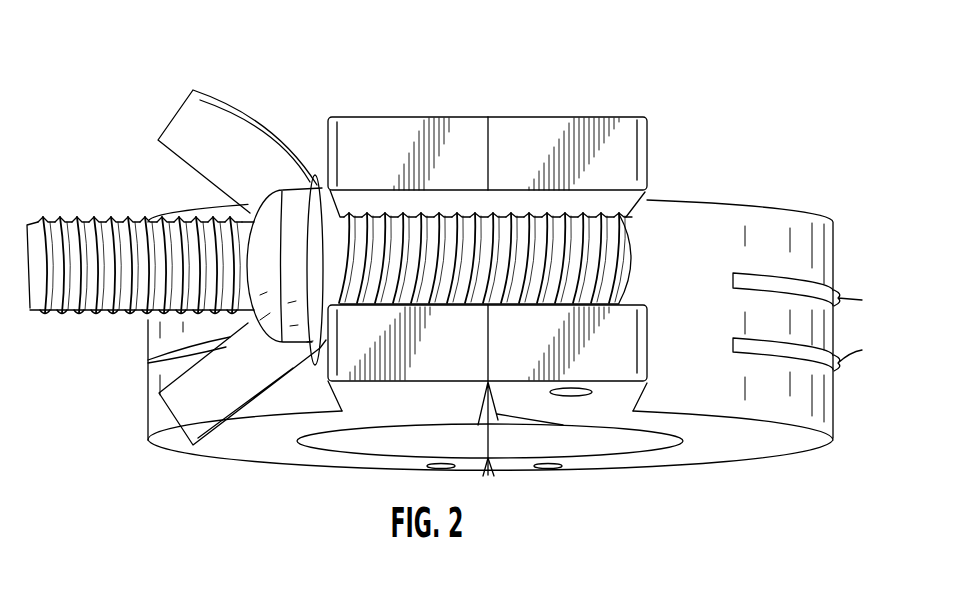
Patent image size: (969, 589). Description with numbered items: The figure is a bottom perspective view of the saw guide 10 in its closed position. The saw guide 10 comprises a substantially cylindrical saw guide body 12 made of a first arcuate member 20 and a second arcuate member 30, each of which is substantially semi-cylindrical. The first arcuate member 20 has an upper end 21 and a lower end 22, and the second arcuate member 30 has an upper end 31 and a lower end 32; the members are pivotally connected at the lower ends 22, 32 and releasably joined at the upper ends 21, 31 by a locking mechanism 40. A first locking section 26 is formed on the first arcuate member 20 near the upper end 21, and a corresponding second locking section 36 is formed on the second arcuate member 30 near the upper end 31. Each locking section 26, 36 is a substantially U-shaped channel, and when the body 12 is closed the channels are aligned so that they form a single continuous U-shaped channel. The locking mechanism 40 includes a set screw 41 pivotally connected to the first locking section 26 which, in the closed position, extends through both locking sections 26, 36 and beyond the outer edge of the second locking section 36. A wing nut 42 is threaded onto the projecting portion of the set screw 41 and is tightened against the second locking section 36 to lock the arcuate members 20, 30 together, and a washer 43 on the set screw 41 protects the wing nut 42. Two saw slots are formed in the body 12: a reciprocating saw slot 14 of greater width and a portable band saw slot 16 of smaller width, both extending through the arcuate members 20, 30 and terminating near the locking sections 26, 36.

The saw guide 10 is at (329, 173).
The saw guide body 12 is at (526, 271).
The reciprocating saw slot 14 is at (758, 280).
The portable band saw slot 16 is at (148, 362).
The first arcuate member 20 is at (515, 214).
The upper end of first arcuate member 21 is at (538, 493).
The lower end of first arcuate member 22 is at (563, 425).
The first locking section 26 is at (487, 222).
The second arcuate member 30 is at (254, 427).
The upper end of second arcuate member 31 is at (522, 550).
The lower end of second arcuate member 32 is at (478, 424).
The second locking section 36 is at (372, 137).
The locking mechanism 40 is at (240, 264).
The set screw 41 is at (118, 232).
The wing nut 42 is at (217, 155).
The washer 43 is at (279, 478).